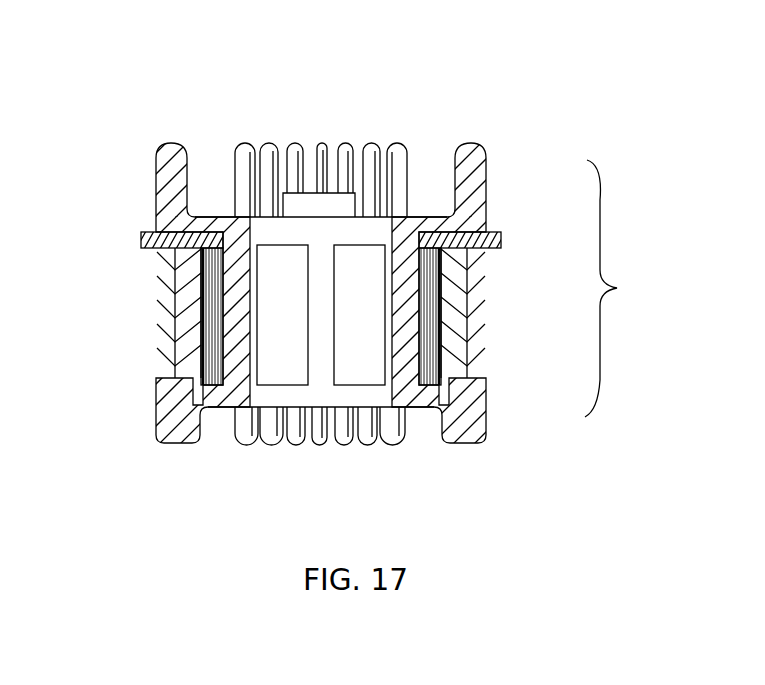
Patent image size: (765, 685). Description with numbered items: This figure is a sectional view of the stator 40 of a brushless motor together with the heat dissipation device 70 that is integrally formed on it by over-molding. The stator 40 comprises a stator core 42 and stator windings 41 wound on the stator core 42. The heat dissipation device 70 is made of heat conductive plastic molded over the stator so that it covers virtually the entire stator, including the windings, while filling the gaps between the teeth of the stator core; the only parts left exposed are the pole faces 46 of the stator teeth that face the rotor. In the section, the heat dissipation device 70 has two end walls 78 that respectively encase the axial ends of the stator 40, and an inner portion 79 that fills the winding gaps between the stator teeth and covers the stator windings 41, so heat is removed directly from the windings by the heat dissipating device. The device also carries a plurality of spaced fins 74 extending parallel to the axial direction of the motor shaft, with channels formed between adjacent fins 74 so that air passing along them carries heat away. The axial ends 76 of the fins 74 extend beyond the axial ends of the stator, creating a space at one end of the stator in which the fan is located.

The stator 40 is at (177, 105).
The stator windings 41 is at (218, 398).
The stator core 42 is at (180, 347).
The pole faces 46 is at (287, 345).
The heat dissipation device 70 is at (617, 288).
The fins 74 is at (473, 378).
The axial ends of the fins 76 is at (467, 163).
The end walls 78 is at (370, 232).
The inner portion 79 is at (412, 312).